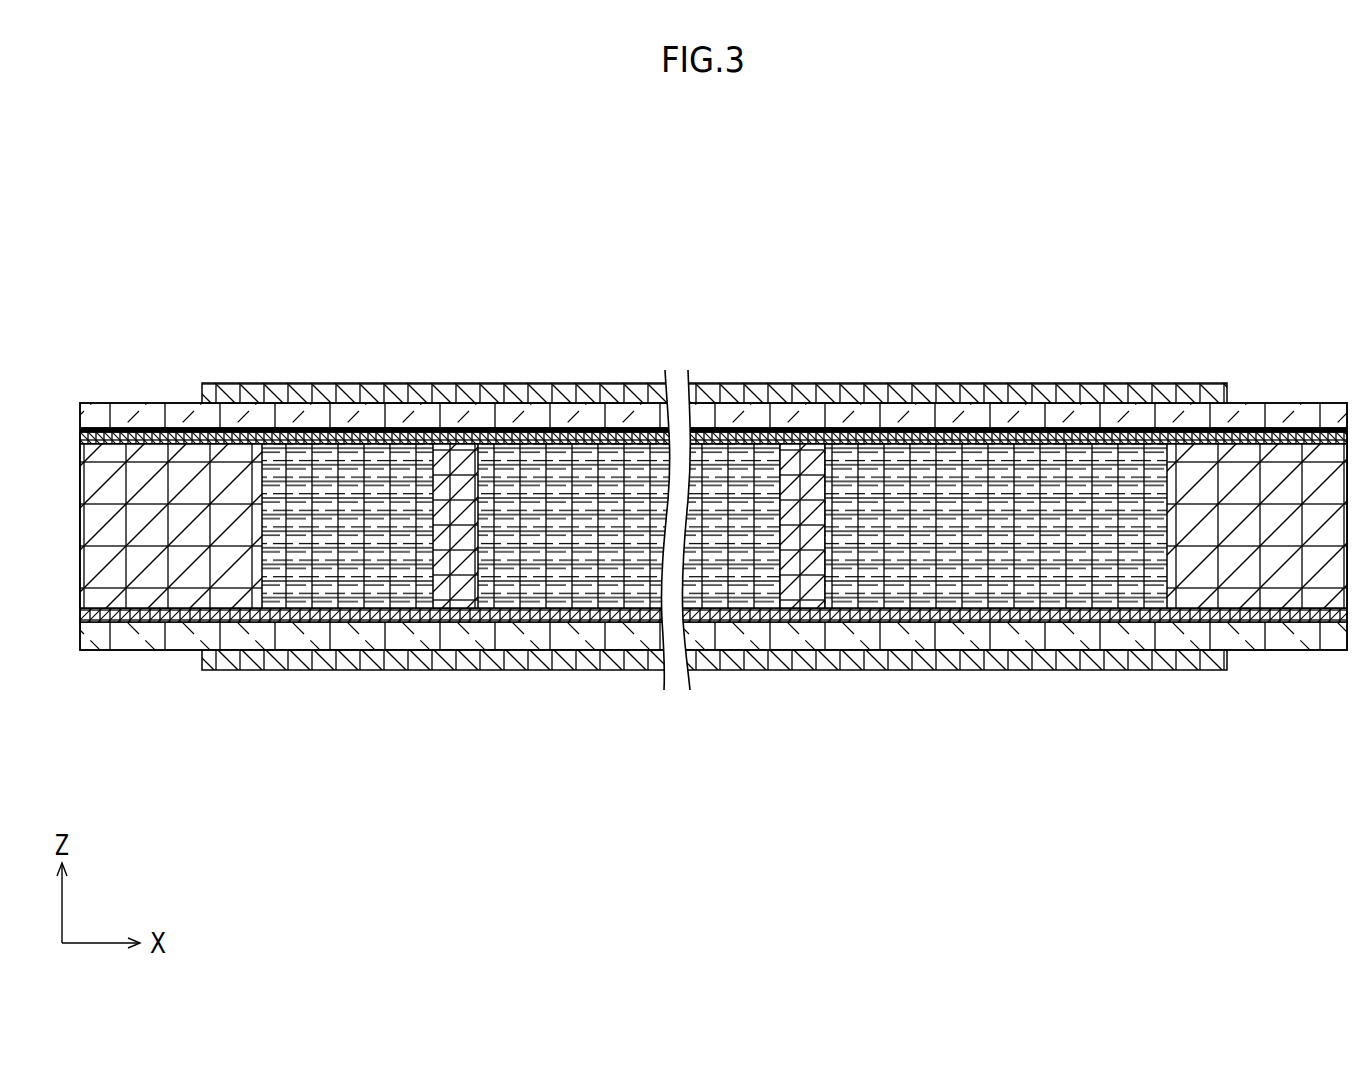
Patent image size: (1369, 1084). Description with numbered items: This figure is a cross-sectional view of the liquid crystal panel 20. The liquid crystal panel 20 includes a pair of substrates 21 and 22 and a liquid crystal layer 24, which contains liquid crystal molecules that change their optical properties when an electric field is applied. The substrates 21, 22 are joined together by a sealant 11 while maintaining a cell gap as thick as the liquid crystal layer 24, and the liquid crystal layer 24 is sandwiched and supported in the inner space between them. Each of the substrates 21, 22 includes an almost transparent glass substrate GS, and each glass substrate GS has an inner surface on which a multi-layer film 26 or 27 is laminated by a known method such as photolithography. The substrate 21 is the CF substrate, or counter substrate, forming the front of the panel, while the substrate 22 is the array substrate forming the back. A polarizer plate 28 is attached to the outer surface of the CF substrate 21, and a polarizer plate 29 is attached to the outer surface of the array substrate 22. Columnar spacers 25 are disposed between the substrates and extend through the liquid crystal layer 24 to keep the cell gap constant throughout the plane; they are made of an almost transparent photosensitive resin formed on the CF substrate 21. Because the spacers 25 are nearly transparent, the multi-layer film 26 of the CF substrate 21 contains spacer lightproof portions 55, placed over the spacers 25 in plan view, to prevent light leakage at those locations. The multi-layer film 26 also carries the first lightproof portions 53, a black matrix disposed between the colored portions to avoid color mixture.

The sealant 11 is at (152, 473).
The liquid crystal panel 20 is at (818, 290).
The CF substrate 21 is at (713, 496).
The array substrate 22 is at (713, 690).
The liquid crystal layer 24 is at (1023, 465).
The columnar spacers 25 is at (456, 578).
The multi-layer film 26 is at (352, 435).
The multi-layer film 27 is at (403, 617).
The polarizer plate 28 is at (258, 398).
The polarizer plate 29 is at (247, 658).
The first lightproof portions 53 is at (540, 430).
The spacer lightproof portions 55 is at (468, 430).
The glass substrate GS is at (328, 420).